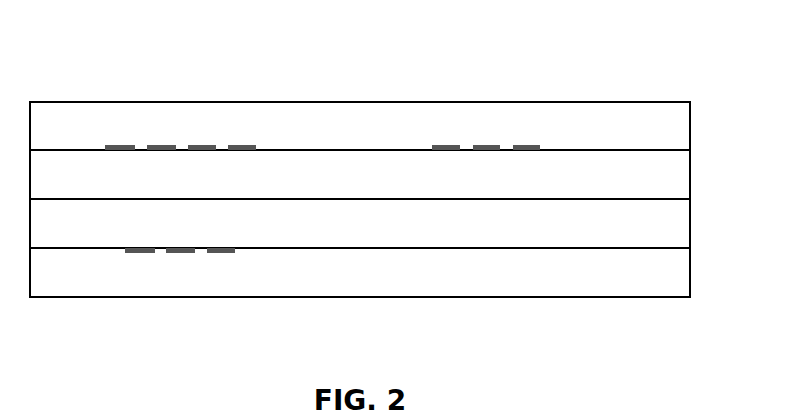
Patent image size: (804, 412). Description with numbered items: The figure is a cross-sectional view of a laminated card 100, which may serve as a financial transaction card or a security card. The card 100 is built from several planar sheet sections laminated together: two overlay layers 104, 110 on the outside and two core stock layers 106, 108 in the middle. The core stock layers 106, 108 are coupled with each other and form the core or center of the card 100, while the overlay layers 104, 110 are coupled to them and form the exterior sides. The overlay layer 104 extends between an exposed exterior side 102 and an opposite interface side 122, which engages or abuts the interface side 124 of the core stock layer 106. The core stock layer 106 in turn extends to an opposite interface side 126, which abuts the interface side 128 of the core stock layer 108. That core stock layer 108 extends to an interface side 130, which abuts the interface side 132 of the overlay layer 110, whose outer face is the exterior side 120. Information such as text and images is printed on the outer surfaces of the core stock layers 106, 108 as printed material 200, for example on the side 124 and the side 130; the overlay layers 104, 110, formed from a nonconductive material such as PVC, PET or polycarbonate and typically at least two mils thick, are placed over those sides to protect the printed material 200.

The laminated card 100 is at (570, 53).
The exterior side 102 is at (333, 97).
The overlay layer 104 is at (680, 126).
The core stock layer 106 is at (680, 174).
The core stock layer 108 is at (680, 223).
The overlay layer 110 is at (680, 272).
The exterior side 120 is at (290, 302).
The interface side 122 is at (609, 154).
The interface side 124 is at (368, 146).
The interface side 126 is at (80, 204).
The interface side 128 is at (263, 194).
The interface side 130 is at (513, 254).
The interface side 132 is at (619, 243).
The printed material 200 is at (120, 135).